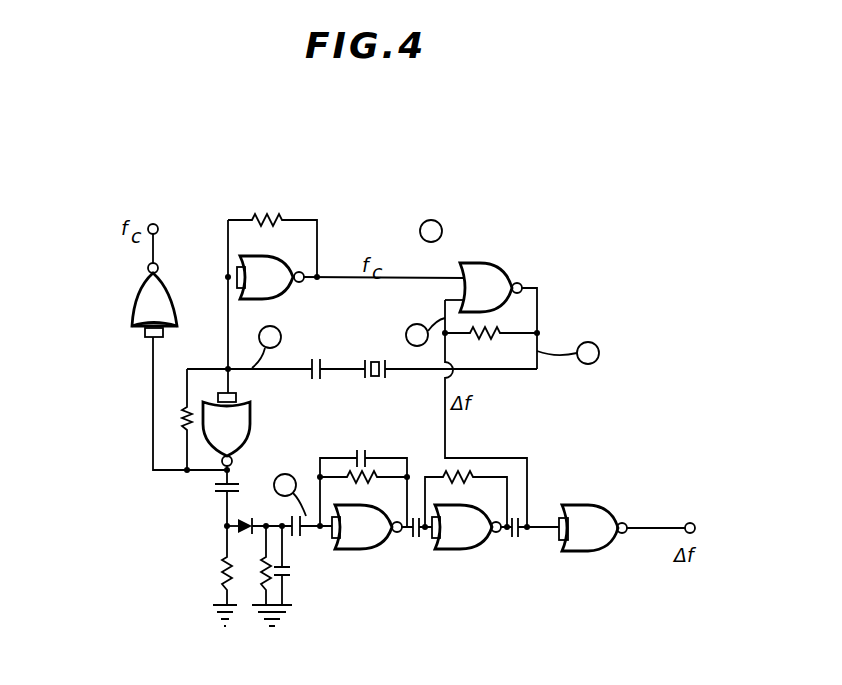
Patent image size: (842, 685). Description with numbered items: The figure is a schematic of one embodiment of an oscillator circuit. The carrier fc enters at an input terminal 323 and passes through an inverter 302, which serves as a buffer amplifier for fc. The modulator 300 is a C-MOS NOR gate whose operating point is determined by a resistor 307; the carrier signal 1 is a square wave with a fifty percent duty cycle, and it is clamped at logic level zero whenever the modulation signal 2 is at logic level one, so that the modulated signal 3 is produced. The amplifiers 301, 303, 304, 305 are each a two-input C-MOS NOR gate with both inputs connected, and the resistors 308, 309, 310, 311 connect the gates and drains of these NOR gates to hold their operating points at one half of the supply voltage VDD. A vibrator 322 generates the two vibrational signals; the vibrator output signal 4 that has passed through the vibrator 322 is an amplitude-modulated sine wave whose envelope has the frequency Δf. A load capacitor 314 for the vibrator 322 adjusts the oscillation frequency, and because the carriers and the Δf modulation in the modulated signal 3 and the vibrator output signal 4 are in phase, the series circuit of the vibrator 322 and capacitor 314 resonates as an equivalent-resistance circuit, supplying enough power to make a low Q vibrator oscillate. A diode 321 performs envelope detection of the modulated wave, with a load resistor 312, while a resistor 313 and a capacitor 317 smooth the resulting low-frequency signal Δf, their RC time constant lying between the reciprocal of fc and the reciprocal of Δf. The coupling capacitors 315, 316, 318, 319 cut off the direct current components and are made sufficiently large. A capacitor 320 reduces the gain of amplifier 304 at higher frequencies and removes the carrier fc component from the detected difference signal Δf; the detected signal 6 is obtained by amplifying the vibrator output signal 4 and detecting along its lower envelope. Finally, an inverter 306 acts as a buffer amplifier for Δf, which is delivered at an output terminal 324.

The modulator 300 is at (497, 276).
The amplifier 301 is at (290, 295).
The inverter 302 is at (200, 263).
The amplifier 303 is at (268, 412).
The amplifier 304 is at (370, 550).
The amplifier 305 is at (472, 550).
The inverter 306 is at (574, 508).
The resistor 307 is at (477, 338).
The resistor 308 is at (270, 218).
The resistor 309 is at (181, 408).
The resistor 310 is at (359, 483).
The resistor 311 is at (461, 483).
The load resistor 312 is at (222, 566).
The resistor 313 is at (262, 578).
The load capacitor 314 is at (314, 382).
The coupling capacitor 315 is at (239, 487).
The coupling capacitor 316 is at (296, 540).
The capacitor 317 is at (292, 573).
The coupling capacitor 318 is at (415, 541).
The coupling capacitor 319 is at (518, 541).
The capacitor 320 is at (361, 451).
The diode 321 is at (240, 521).
The vibrator 322 is at (374, 360).
The input terminal fc 323 is at (156, 224).
The output terminal Δf 324 is at (708, 518).
The carrier fc waveform 1 is at (431, 231).
The modulation signal waveform 2 is at (425, 332).
The modulated signal waveform 3 is at (568, 353).
The vibrator output waveform 4 is at (266, 347).
The detected waveform 6 is at (290, 495).